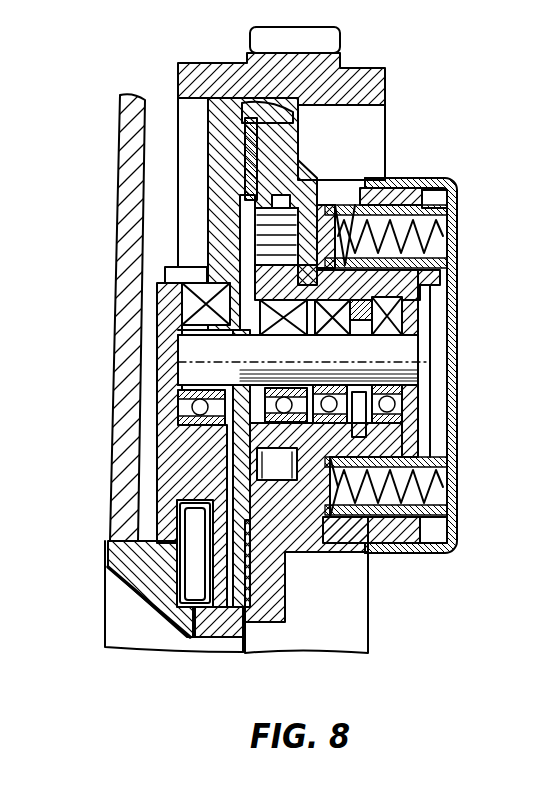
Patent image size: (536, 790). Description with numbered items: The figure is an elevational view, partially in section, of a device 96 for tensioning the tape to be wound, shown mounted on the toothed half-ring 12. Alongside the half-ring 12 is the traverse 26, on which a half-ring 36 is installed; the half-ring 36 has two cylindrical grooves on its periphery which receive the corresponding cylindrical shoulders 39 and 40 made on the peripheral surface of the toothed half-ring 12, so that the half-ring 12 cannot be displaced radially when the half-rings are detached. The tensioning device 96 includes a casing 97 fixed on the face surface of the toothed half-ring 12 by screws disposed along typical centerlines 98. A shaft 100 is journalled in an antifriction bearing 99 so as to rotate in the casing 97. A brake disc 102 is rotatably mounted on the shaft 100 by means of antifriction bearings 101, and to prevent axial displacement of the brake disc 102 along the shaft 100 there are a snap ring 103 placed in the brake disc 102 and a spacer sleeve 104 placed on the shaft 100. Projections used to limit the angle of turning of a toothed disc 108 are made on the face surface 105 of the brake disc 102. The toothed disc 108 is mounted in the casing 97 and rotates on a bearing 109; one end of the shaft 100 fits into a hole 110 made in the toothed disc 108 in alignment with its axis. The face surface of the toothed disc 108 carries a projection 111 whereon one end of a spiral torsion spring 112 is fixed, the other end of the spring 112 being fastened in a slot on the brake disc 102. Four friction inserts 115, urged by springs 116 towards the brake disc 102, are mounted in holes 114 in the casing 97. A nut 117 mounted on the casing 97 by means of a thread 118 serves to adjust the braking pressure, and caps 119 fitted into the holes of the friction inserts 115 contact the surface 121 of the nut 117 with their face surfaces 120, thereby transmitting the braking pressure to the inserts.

The toothed half-ring 12 is at (350, 70).
The traverse 26 is at (117, 407).
The half-ring 36 is at (108, 550).
The cylindrical shoulder 39 is at (160, 548).
The cylindrical shoulder 40 is at (190, 632).
The device for tensioning the tape 96 is at (438, 105).
The casing 97 is at (268, 105).
The centerlines 98 is at (309, 113).
The antifriction bearing 99 is at (422, 318).
The shaft 100 is at (177, 352).
The antifriction bearings 101 is at (290, 335).
The brake disc 102 is at (220, 292).
The snap ring 103 is at (240, 433).
The spacer sleeve 104 is at (358, 367).
The face surface 105 is at (240, 262).
The toothed disc 108 is at (262, 190).
The bearing 109 is at (190, 320).
The hole 110 is at (195, 372).
The projection 111 is at (250, 222).
The spiral torsion spring 112 is at (240, 240).
The holes 114 is at (359, 187).
The friction inserts 115 is at (400, 448).
The springs 116 is at (433, 472).
The nut 117 is at (382, 188).
The thread 118 is at (390, 545).
The caps 119 is at (458, 190).
The face surfaces 120 is at (445, 497).
The surface 121 is at (453, 342).